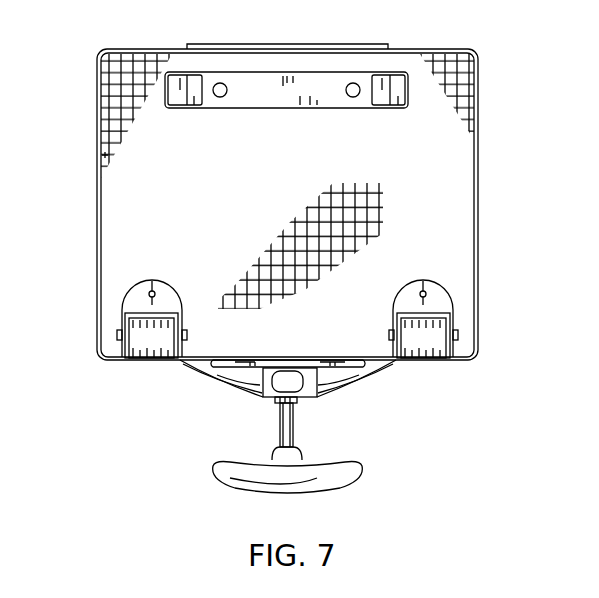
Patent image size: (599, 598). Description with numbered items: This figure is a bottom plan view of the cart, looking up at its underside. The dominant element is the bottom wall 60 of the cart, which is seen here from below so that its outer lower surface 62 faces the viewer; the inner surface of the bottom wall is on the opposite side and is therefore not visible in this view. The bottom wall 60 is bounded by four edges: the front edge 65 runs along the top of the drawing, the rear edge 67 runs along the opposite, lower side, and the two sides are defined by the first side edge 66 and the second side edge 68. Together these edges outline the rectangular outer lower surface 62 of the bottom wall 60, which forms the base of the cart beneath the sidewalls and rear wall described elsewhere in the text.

The bottom wall 60 is at (423, 188).
The outer lower surface 62 is at (418, 242).
The front edge 65 is at (428, 50).
The first side edge 66 is at (478, 316).
The rear edge 67 is at (460, 362).
The second side edge 68 is at (97, 232).